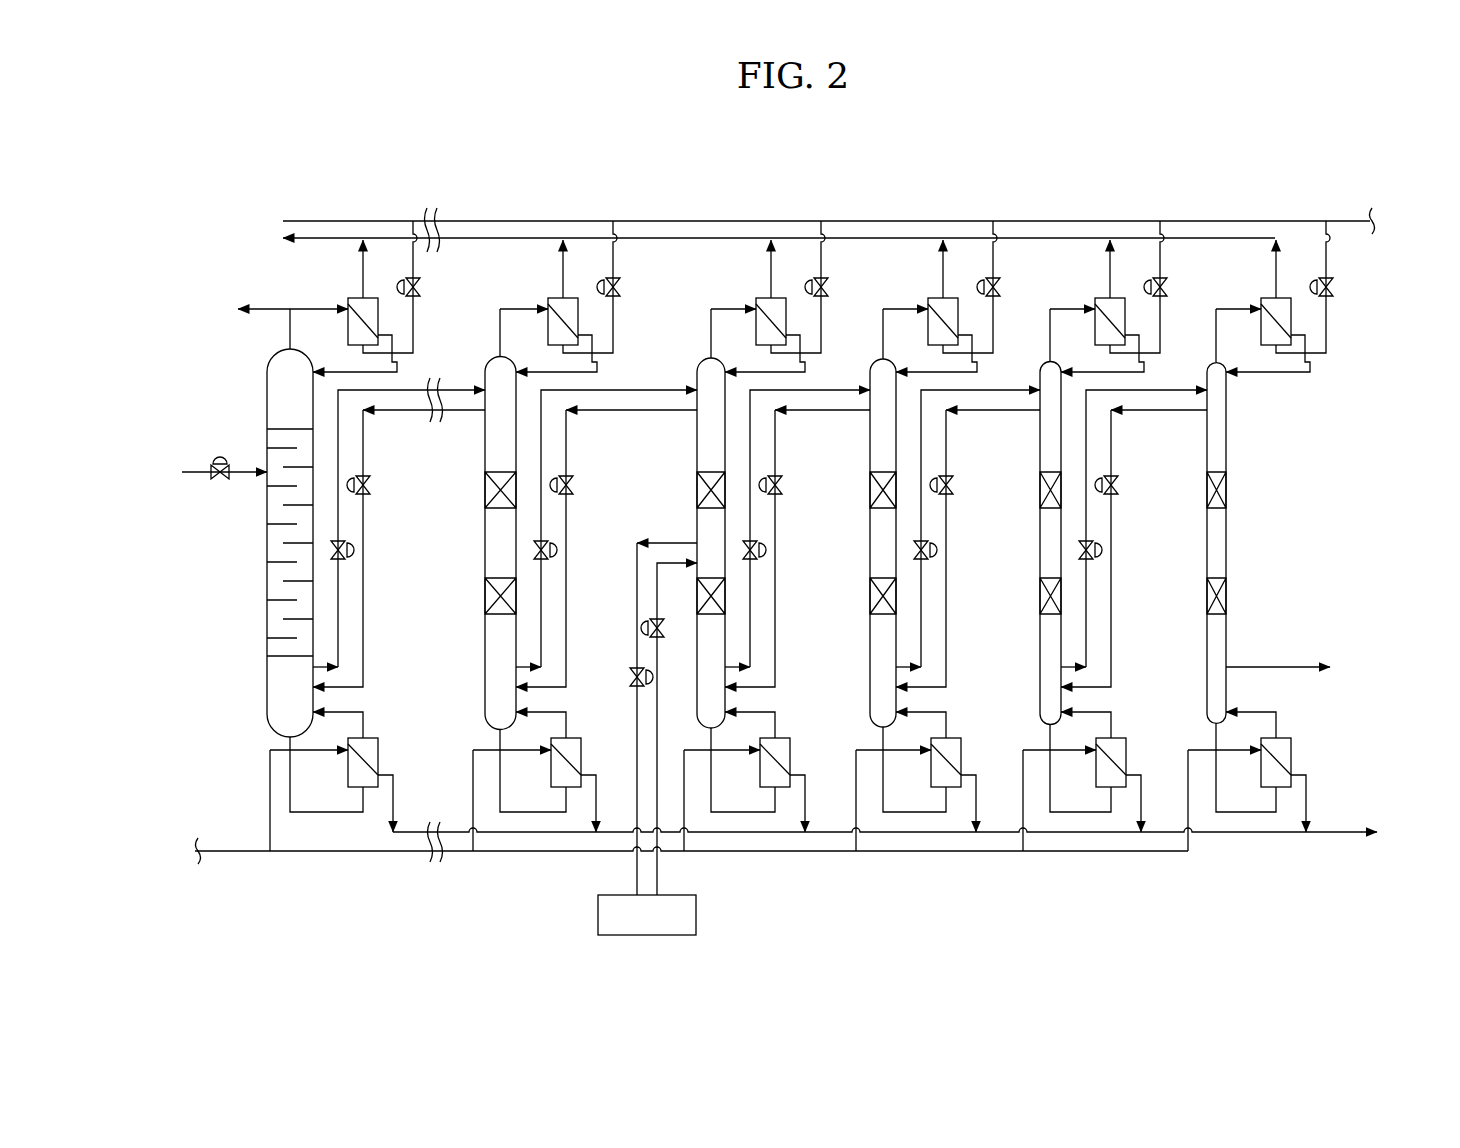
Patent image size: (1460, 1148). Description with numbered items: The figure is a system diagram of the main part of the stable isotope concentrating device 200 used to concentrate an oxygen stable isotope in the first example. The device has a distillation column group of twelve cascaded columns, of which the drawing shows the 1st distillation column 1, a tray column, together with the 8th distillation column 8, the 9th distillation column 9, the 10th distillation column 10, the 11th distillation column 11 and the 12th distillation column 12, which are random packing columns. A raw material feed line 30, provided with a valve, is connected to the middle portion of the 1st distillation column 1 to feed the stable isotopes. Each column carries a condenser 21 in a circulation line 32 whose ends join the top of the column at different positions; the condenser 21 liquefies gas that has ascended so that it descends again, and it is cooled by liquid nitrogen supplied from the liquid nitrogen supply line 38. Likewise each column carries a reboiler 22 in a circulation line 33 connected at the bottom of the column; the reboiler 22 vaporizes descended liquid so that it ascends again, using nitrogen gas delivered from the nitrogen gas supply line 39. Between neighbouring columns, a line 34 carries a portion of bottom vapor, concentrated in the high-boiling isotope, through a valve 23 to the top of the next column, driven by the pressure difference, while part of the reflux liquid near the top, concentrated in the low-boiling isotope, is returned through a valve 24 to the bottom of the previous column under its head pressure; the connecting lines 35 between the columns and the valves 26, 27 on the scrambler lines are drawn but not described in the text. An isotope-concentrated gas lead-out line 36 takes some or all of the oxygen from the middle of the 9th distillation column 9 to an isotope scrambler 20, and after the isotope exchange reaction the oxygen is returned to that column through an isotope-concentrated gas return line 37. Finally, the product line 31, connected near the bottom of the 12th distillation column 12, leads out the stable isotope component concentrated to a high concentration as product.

The stable isotope concentrating device 200 is at (1136, 202).
The 1st distillation column 1 is at (267, 645).
The 8th distillation column 8 is at (485, 645).
The 9th distillation column 9 is at (697, 645).
The 10th distillation column 10 is at (870, 645).
The 11th distillation column 11 is at (1040, 645).
The 12th distillation column 12 is at (1207, 645).
The isotope scrambler 20 is at (674, 895).
The condenser 21 is at (347, 297).
The reboiler 22 is at (376, 737).
The valve 23 is at (341, 556).
The valve 24 is at (366, 491).
The valve 26 is at (628, 673).
The valve 27 is at (646, 623).
The raw material feed line 30 is at (217, 465).
The product line 31 is at (1245, 667).
The circulation line 32 is at (363, 369).
The circulation line 33 is at (363, 711).
The line 34 is at (456, 388).
The transfer line 35 is at (458, 413).
The isotope-concentrated gas lead-out line 36 is at (599, 830).
The isotope-concentrated gas return line 37 is at (659, 668).
The liquid nitrogen supply line 38 is at (1263, 221).
The nitrogen gas supply line 39 is at (228, 850).